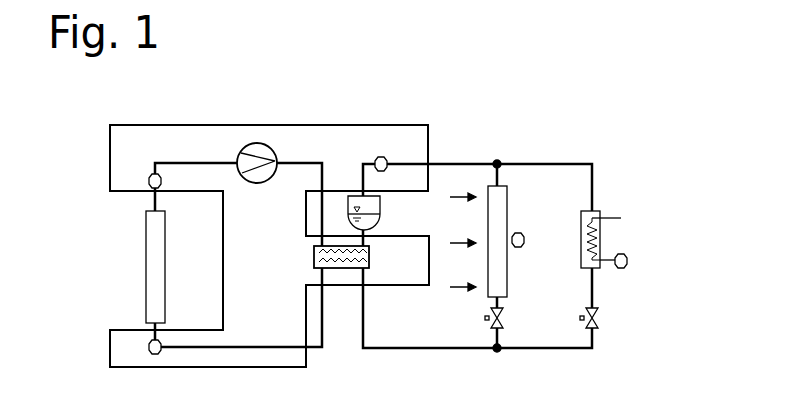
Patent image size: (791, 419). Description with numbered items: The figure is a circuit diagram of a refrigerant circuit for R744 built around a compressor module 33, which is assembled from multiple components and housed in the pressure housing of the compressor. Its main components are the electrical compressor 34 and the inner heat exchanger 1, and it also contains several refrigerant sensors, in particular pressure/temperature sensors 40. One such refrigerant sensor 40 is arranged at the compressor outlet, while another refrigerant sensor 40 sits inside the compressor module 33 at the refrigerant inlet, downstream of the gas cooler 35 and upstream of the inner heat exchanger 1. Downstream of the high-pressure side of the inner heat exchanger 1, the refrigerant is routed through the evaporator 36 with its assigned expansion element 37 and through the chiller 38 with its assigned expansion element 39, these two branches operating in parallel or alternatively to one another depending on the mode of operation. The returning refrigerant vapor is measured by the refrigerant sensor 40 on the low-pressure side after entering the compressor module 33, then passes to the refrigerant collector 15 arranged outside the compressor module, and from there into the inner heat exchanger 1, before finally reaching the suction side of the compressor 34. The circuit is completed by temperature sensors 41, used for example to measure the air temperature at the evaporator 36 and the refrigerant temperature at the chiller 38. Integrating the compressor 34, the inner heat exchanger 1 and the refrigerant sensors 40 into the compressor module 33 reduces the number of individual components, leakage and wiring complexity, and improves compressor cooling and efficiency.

The inner heat exchanger 1 is at (345, 270).
The refrigerant collector 15 is at (378, 199).
The compressor module 33 is at (372, 131).
The electrical compressor 34 is at (272, 152).
The gas cooler 35 is at (147, 230).
The evaporator 36 is at (500, 212).
The expansion element 37 is at (504, 323).
The chiller 38 is at (597, 213).
The expansion element 39 is at (600, 322).
The pressure/temperature sensor 40 is at (152, 176).
The temperature sensor 41 is at (525, 236).